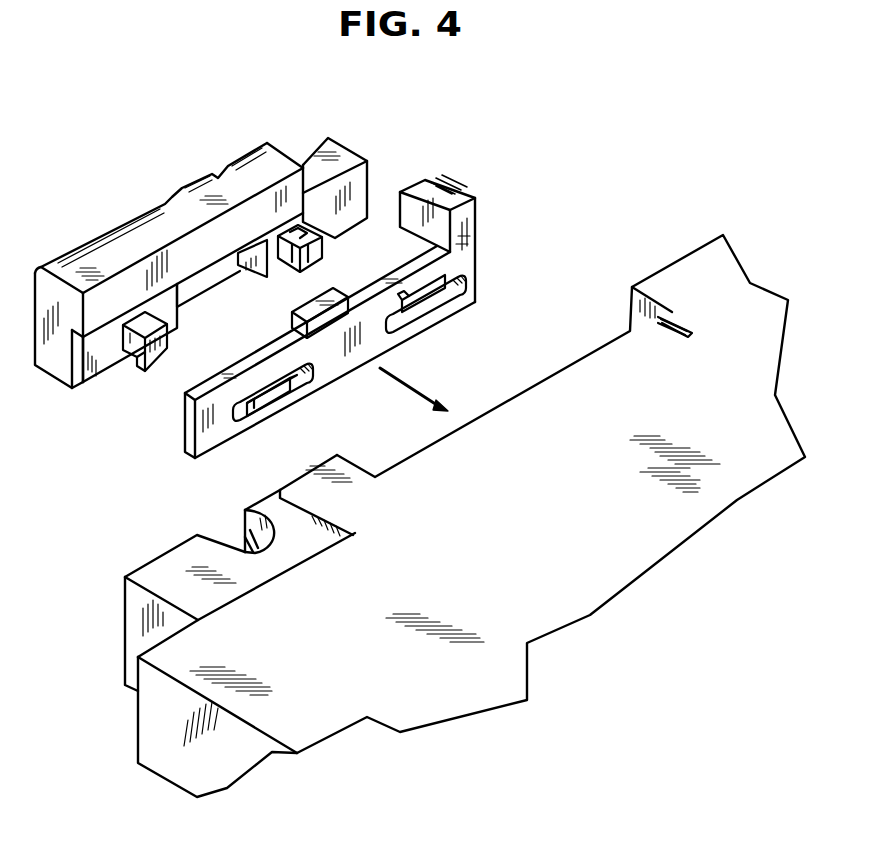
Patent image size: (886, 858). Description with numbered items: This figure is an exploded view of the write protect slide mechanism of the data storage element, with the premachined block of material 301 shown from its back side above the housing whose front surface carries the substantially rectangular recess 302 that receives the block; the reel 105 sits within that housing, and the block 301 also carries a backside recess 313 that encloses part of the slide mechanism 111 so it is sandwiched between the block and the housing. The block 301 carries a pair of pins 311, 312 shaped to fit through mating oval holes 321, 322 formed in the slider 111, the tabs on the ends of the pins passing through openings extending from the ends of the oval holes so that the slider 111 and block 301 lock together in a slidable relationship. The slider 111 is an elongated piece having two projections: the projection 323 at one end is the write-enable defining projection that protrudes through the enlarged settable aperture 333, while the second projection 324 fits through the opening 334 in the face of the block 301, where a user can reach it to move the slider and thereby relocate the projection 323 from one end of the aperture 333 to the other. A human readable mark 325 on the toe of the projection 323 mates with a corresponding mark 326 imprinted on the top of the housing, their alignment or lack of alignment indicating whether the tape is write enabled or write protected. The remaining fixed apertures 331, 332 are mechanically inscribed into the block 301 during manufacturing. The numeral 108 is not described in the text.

The reel 105 is at (273, 582).
The notch 108 is at (197, 557).
The slide mechanism 111 is at (466, 187).
The premachined block of material 301 is at (342, 144).
The recess 302 is at (493, 412).
The pin 311 is at (143, 371).
The pin 312 is at (323, 253).
The recess 313 is at (84, 374).
The oval hole 321 is at (270, 400).
The oval hole 322 is at (430, 307).
The projection 323 is at (402, 199).
The projection 324 is at (289, 312).
The human readable mark 325 is at (437, 184).
The human readable mark 326 is at (677, 336).
The fixed aperture 331 is at (172, 196).
The fixed aperture 332 is at (228, 166).
The write protect aperture 333 is at (296, 159).
The opening 334 is at (202, 292).